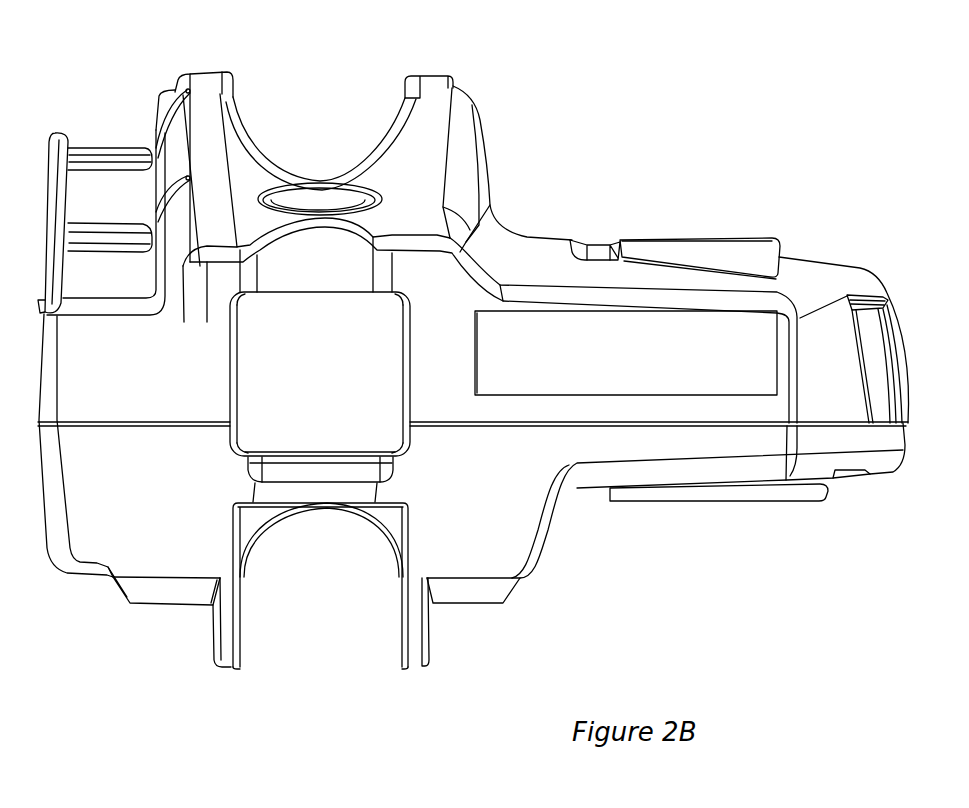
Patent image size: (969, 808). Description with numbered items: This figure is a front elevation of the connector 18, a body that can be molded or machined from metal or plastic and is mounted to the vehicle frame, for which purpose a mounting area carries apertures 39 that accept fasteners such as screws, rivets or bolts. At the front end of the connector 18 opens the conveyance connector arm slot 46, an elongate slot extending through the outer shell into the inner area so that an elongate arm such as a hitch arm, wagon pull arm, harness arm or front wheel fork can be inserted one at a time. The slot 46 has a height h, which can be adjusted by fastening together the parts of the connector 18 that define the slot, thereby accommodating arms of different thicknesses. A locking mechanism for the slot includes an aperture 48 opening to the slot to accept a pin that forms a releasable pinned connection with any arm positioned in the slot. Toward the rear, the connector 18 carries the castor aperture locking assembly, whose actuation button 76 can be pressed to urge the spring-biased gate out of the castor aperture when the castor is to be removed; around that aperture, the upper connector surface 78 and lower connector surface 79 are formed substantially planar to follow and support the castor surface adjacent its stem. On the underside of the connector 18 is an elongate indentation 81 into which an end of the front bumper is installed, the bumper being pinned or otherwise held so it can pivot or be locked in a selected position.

The connector 18 is at (537, 246).
The apertures 39 is at (113, 248).
The conveyance connector arm slot 46 is at (325, 392).
The aperture 48 is at (317, 207).
The actuation button 76 is at (861, 317).
The upper connector surface 78 is at (681, 238).
The lower connector surface 79 is at (686, 502).
The elongate indentation 81 is at (260, 540).
The height of the slot h is at (366, 452).